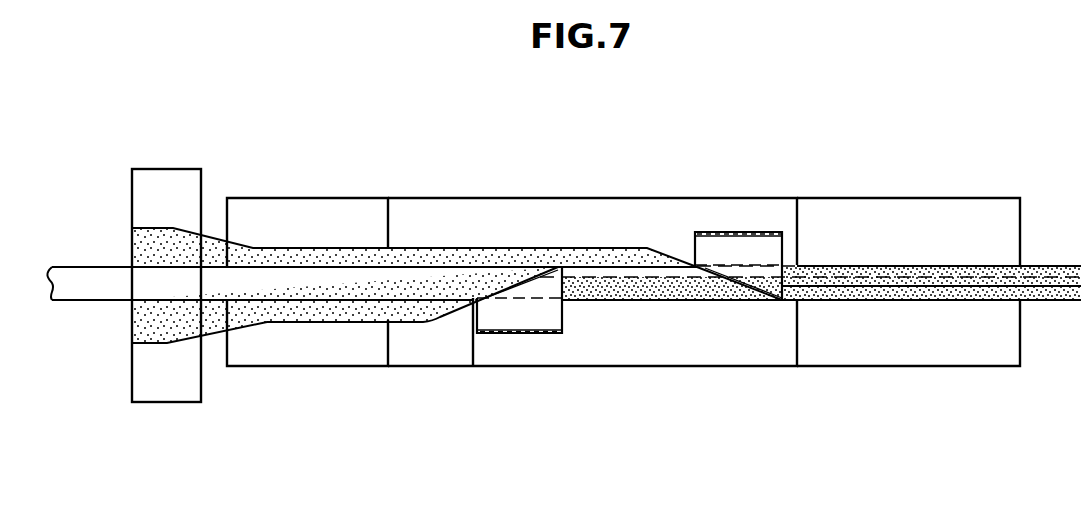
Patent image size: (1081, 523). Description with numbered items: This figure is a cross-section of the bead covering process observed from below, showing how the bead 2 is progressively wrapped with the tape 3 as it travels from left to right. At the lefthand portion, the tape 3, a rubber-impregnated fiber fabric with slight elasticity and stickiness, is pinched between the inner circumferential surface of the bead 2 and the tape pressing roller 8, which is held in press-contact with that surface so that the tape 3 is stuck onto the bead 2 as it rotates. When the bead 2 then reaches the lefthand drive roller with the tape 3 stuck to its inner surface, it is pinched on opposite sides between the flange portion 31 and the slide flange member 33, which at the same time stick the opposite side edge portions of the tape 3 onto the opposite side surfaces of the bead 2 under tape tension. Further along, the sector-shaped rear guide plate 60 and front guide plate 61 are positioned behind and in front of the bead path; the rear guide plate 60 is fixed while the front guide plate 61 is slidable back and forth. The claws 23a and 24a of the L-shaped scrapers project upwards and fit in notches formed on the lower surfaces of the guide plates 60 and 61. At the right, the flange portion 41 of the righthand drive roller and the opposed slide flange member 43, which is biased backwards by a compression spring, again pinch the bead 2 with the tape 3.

The bead 2 is at (95, 279).
The tape 3 is at (213, 233).
The tape pressing roller 8 is at (167, 169).
The slide flange member 33 is at (313, 198).
The flange portion 31 is at (333, 354).
The front guide plate 61 is at (523, 207).
The rear guide plate 60 is at (613, 347).
The claw 23a is at (519, 318).
The claw 24a is at (750, 243).
The slide flange member 43 is at (900, 212).
The flange portion 41 is at (897, 353).